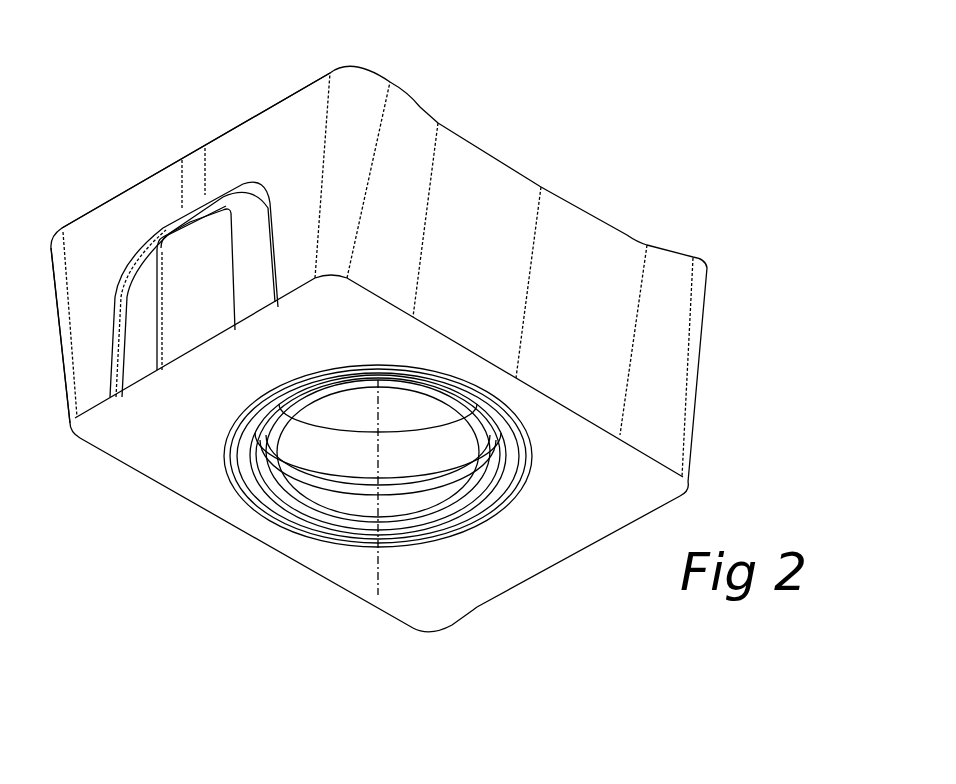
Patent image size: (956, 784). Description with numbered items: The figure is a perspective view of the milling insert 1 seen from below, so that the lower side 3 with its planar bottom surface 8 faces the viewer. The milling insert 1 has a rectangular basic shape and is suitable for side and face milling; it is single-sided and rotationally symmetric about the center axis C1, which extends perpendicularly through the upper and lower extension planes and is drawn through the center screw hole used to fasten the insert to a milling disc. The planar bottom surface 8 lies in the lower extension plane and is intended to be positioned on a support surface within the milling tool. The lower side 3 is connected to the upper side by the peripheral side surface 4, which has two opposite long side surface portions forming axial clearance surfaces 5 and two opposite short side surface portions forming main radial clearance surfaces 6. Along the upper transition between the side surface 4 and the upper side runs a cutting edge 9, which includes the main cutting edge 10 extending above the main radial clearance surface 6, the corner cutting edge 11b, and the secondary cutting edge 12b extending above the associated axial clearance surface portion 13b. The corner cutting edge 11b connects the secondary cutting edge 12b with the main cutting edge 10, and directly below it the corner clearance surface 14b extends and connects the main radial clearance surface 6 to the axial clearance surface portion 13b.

The milling insert 1 is at (379, 341).
The lower side 3 is at (163, 458).
The peripheral side surface 4 is at (488, 278).
The axial clearance surface 5 is at (586, 317).
The main radial clearance surface 6 is at (302, 193).
The planar bottom surface 8 is at (443, 600).
The cutting edge 9 is at (115, 198).
The main cutting edge 10 is at (297, 93).
The corner cutting edge 11b is at (368, 66).
The secondary cutting edge 12b is at (421, 106).
The axial clearance surface portion 13b is at (426, 193).
The corner clearance surface 14b is at (376, 129).
The center axis C1 is at (396, 487).